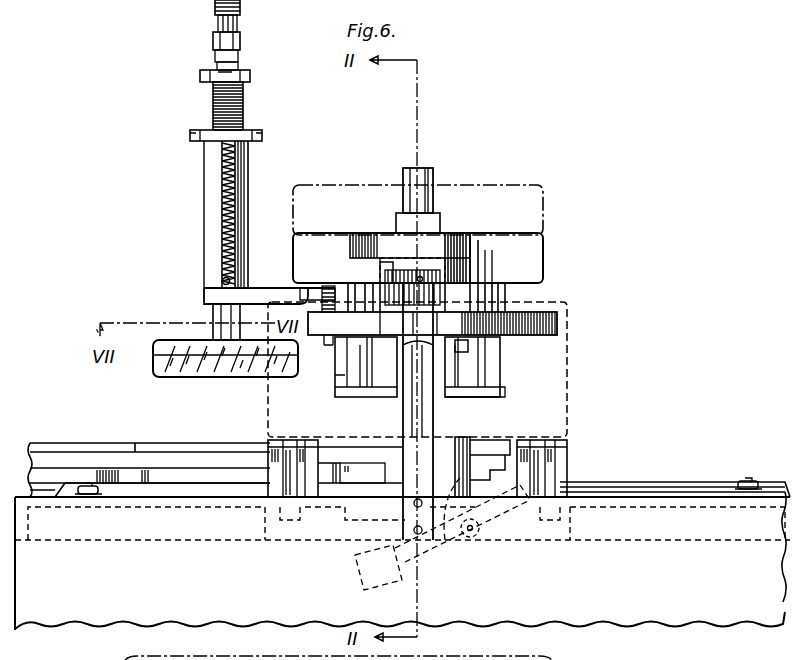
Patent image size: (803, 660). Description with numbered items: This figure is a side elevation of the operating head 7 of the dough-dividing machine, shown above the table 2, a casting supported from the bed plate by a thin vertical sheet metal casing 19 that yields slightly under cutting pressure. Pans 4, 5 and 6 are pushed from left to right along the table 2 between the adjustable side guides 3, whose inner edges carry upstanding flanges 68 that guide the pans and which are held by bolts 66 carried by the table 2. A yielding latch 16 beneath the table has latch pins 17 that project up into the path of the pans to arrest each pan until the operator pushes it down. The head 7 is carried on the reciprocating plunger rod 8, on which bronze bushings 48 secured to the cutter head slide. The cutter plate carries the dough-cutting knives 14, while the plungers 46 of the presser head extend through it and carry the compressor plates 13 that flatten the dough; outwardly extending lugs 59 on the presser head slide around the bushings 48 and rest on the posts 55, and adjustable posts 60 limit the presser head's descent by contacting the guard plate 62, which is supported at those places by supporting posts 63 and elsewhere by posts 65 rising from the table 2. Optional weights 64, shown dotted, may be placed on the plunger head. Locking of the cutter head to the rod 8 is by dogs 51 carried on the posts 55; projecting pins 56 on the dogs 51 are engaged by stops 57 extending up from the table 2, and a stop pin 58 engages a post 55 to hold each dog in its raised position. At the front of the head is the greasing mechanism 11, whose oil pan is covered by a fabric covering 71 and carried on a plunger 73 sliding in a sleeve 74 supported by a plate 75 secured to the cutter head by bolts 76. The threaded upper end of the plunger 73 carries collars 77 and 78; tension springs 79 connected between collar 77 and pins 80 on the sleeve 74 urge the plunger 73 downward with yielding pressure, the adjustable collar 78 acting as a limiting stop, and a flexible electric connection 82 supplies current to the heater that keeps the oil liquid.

The table 2 is at (402, 561).
The side guides 3 is at (178, 492).
The pan 4 is at (55, 475).
The pan 5 is at (185, 468).
The pan 6 is at (355, 465).
The operating head 7 is at (545, 250).
The plunger rod 8 is at (438, 168).
The greasing mechanism 11 is at (186, 378).
The compressor plates 13 is at (508, 395).
The dough-cutting knives 14 is at (385, 376).
The yielding latch 16 is at (482, 530).
The latch pins 17 is at (515, 508).
The sheet metal casing 19 is at (690, 604).
The plungers 46 is at (485, 366).
The bushings 48 is at (437, 232).
The dogs 51 is at (470, 256).
The posts 55 is at (470, 276).
The projecting pins 56 is at (419, 278).
The stops 57 is at (435, 424).
The stop pin 58 is at (382, 280).
The lugs 59 is at (433, 245).
The adjustable posts 60 is at (468, 347).
The guard plate 62 is at (569, 384).
The supporting posts 63 is at (455, 500).
The weight 64 is at (540, 200).
The posts 65 is at (278, 462).
The bolts 66 is at (95, 494).
The upstanding flanges 68 is at (213, 492).
The fabric covering 71 is at (240, 372).
The plunger 73 is at (213, 313).
The sleeve 74 is at (205, 259).
The plate 75 is at (256, 296).
The bolts 76 is at (327, 335).
The collar 77 is at (203, 79).
The adjustable collar 78 is at (208, 137).
The tension springs 79 is at (223, 196).
The pins 80 is at (222, 284).
The flexible electric connection 82 is at (215, 4).